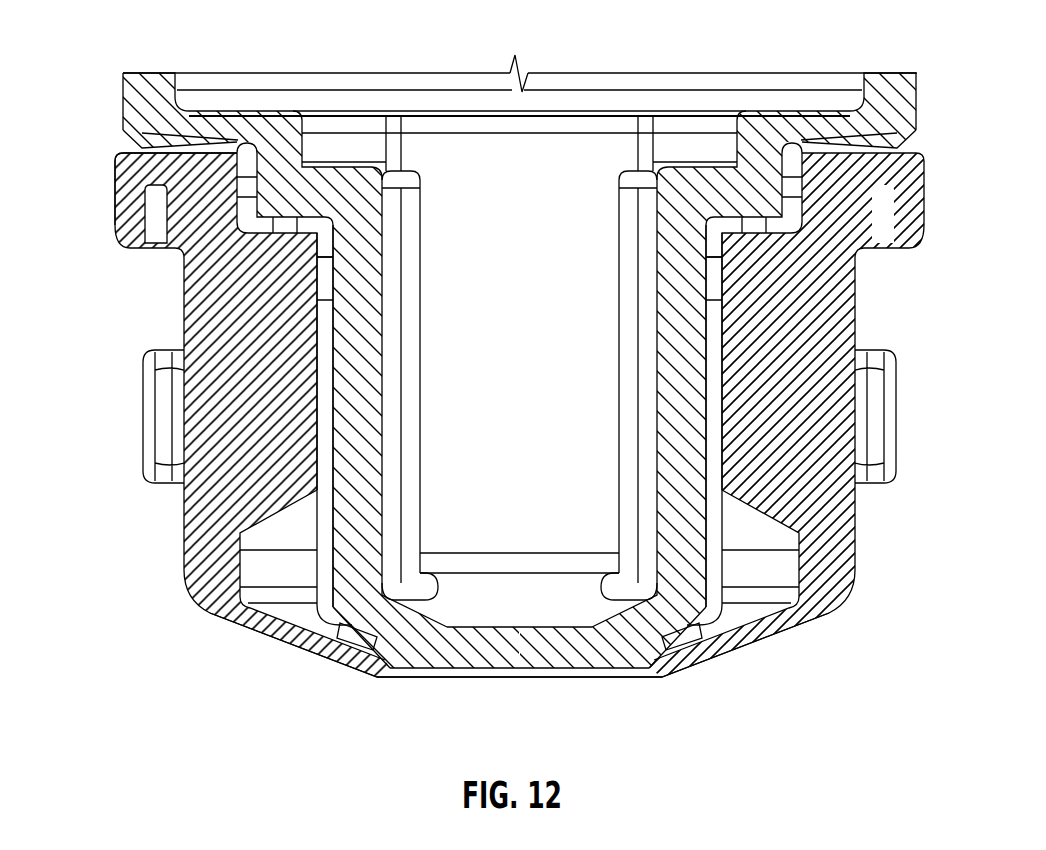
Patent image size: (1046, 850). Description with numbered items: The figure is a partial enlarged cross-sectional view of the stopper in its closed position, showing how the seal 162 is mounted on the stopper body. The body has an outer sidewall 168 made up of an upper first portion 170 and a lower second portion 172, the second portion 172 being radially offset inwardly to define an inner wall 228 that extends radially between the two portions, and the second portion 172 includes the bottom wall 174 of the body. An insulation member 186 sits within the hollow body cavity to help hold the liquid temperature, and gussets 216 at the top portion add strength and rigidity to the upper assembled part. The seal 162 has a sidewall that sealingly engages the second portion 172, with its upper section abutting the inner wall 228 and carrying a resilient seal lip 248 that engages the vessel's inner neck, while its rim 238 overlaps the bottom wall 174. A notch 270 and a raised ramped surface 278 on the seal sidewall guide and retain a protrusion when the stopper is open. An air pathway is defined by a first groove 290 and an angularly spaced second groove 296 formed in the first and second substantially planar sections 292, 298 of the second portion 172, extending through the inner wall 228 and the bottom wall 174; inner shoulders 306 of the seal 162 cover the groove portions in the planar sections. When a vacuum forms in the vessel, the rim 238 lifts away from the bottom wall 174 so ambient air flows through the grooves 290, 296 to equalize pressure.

The seal 162 is at (501, 424).
The outer sidewall 168 is at (132, 96).
The first portion 170 is at (893, 80).
The second portion 172 is at (492, 378).
The bottom wall 174 is at (450, 640).
The insulation member 186 is at (520, 73).
The gussets 216 is at (857, 310).
The inner wall 228 is at (233, 113).
The rim 238 is at (776, 628).
The seal lip 248 is at (120, 233).
The notch 270 is at (860, 410).
The raised ramped surface 278 is at (143, 413).
The first groove 290 is at (359, 384).
The first substantially planar section 292 is at (317, 447).
The second groove 296 is at (676, 384).
The second substantially planar section 298 is at (722, 466).
The inner shoulders 306 is at (300, 313).